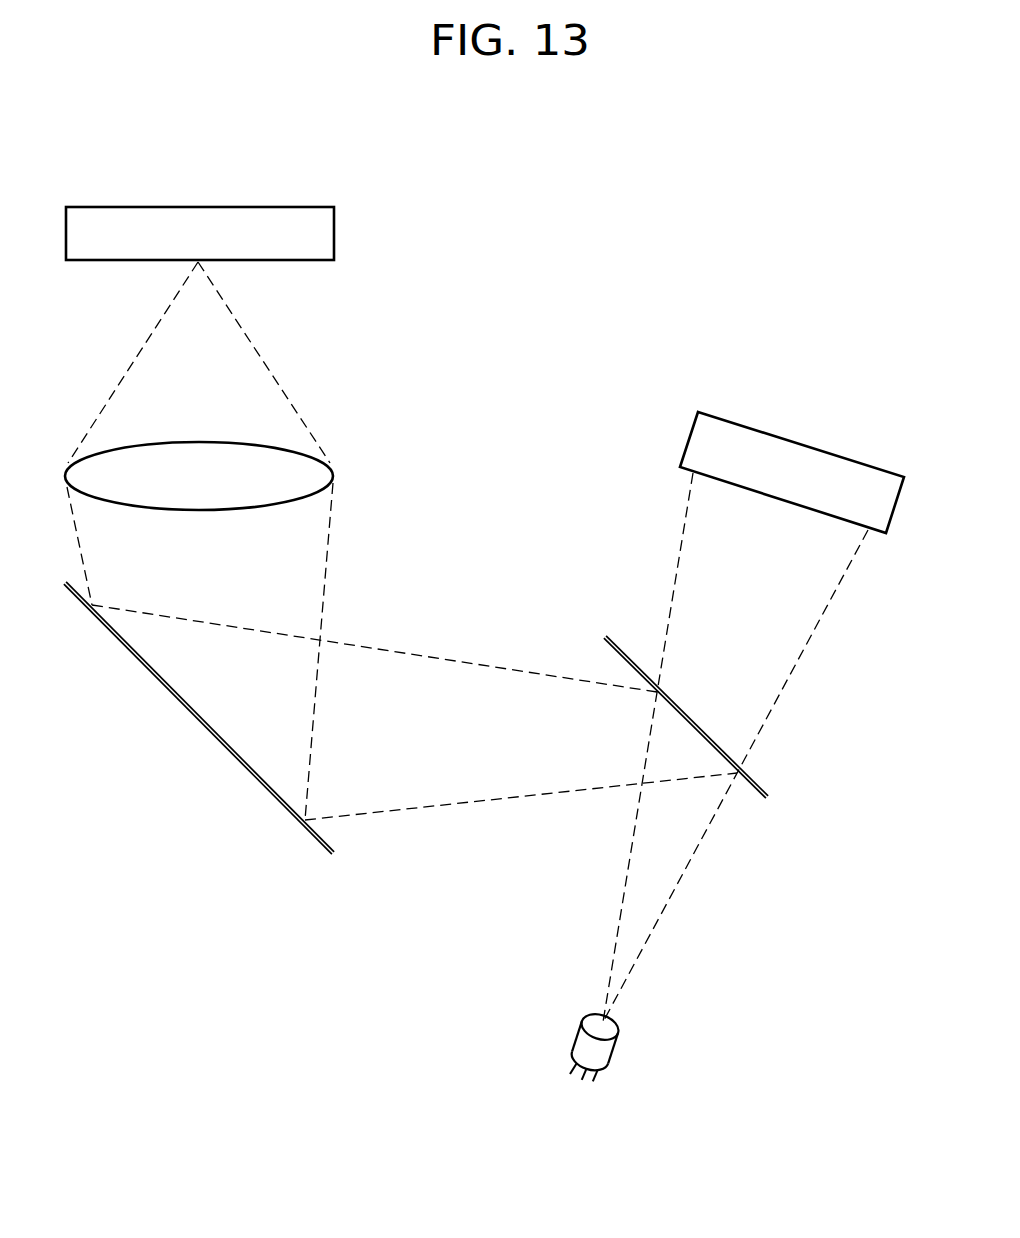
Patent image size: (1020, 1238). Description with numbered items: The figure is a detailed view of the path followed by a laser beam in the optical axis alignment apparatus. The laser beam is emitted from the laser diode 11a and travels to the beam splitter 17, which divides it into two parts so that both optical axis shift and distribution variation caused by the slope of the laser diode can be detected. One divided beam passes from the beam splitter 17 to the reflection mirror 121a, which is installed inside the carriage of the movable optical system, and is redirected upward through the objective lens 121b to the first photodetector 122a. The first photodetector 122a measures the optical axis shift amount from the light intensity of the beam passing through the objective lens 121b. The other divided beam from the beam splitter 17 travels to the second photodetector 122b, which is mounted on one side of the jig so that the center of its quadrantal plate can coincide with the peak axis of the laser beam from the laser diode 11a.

The first photodetector 122a is at (230, 207).
The objective lens 121b is at (333, 470).
The reflection mirror 121a is at (317, 847).
The second photodetector 122b is at (785, 437).
The beam splitter 17 is at (770, 793).
The laser diode 11a is at (617, 1040).